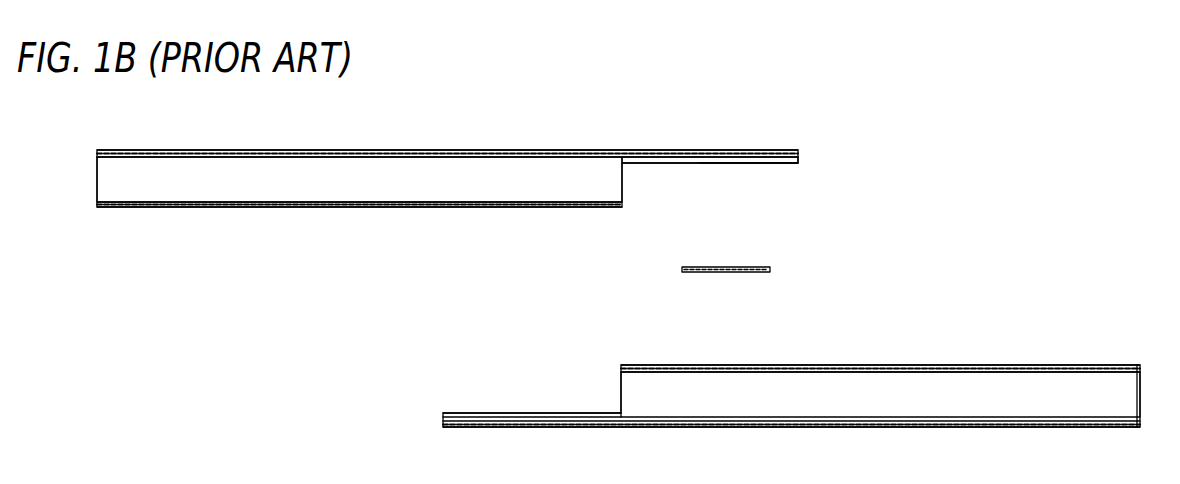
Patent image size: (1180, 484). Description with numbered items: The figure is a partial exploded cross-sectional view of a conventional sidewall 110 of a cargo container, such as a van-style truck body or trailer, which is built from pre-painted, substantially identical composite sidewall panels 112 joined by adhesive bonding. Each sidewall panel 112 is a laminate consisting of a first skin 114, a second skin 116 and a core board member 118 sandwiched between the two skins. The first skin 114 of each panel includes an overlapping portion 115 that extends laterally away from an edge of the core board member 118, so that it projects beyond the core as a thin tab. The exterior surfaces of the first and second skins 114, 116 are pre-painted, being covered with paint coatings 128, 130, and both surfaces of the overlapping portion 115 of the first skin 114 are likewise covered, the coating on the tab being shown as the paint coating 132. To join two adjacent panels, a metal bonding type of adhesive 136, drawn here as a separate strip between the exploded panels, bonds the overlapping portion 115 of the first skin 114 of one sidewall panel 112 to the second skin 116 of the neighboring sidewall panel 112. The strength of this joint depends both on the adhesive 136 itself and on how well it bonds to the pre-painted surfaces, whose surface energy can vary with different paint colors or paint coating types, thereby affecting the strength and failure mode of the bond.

The sidewall 110 is at (964, 205).
The sidewall panel 112 is at (239, 143).
The first skin 114 is at (183, 150).
The overlapping portion 115 is at (672, 150).
The second skin 116 is at (250, 205).
The core board member 118 is at (117, 187).
The paint coating 128 is at (535, 150).
The paint coating 130 is at (345, 208).
The paint coating 132 is at (745, 163).
The adhesive 136 is at (770, 270).